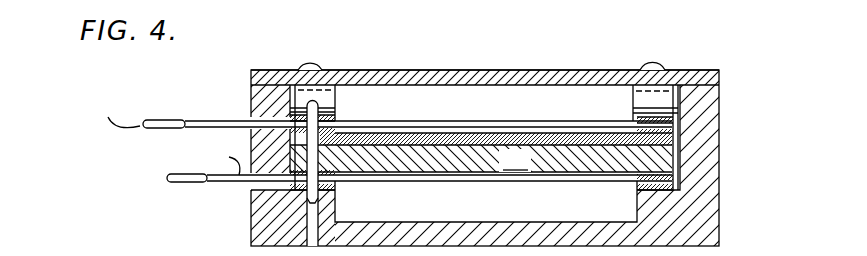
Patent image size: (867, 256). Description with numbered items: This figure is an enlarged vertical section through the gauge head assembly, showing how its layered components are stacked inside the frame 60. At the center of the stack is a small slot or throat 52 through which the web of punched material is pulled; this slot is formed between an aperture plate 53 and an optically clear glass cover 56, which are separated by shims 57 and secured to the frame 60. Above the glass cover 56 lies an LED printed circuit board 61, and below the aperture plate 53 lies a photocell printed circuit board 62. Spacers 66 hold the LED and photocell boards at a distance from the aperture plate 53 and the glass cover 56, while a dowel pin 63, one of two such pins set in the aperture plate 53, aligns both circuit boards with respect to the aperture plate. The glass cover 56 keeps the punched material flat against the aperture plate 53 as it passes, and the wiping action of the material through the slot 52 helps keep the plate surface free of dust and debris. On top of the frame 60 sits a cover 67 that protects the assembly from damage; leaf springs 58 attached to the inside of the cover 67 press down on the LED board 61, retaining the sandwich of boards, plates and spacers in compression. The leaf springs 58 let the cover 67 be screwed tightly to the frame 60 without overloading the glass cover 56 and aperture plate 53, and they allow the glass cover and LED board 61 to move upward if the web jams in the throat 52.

The slot 52 is at (480, 146).
The aperture plate 53 is at (515, 160).
The glass cover 56 is at (448, 140).
The shims 57 is at (348, 143).
The leaf springs 58 is at (325, 95).
The frame 60 is at (719, 138).
The LED printed circuit board 61 is at (199, 120).
The photocell printed circuit board 62 is at (183, 183).
The dowel pin 63 is at (312, 190).
The spacers 66 is at (336, 147).
The cover 67 is at (700, 70).